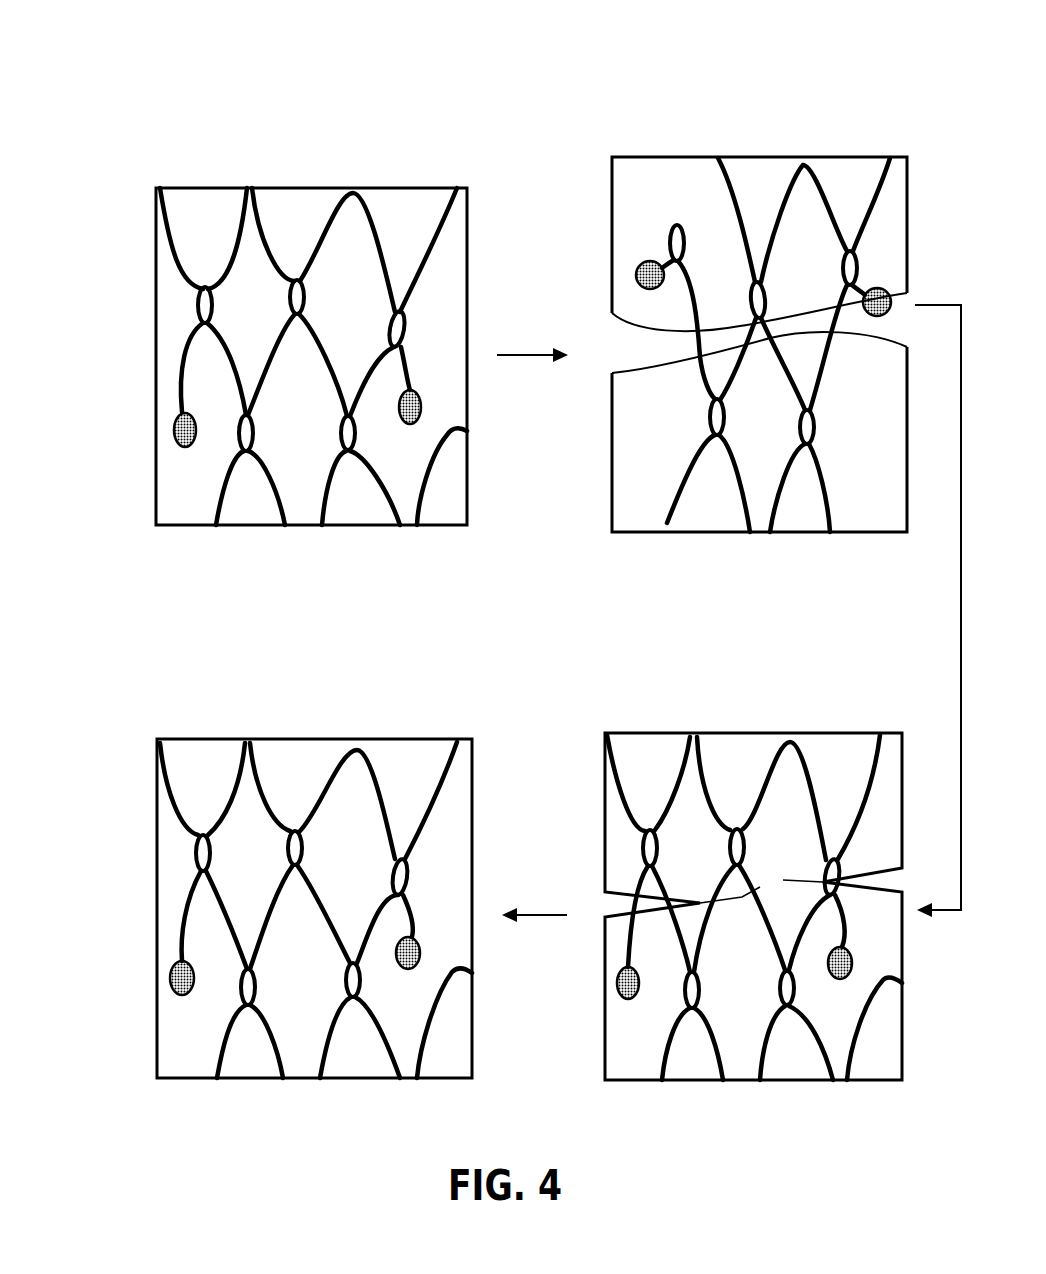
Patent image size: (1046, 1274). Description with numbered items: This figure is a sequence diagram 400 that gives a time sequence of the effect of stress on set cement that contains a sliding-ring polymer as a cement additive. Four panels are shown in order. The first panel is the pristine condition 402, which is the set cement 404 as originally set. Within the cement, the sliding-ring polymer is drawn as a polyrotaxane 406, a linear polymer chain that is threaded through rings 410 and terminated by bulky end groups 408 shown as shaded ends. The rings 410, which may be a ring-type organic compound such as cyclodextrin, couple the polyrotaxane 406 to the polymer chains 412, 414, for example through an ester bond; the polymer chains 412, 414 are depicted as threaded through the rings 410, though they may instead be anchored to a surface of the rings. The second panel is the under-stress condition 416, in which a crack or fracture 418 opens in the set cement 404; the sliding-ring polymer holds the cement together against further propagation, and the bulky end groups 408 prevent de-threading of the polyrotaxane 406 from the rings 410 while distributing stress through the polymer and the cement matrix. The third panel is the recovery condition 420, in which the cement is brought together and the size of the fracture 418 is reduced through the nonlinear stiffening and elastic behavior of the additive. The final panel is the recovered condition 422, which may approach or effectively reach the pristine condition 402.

The sequence diagram 400 is at (163, 89).
The pristine condition 402 is at (302, 188).
The set cement 404 is at (182, 485).
The polyrotaxane 406 is at (183, 357).
The bulky end groups 408 is at (173, 425).
The rings 410 is at (413, 330).
The polymer chain 412 is at (168, 238).
The polymer chain 414 is at (222, 483).
The under-stress condition 416 is at (767, 155).
The crack or fracture 418 is at (617, 341).
The recovery condition 420 is at (745, 732).
The recovered condition 422 is at (307, 738).